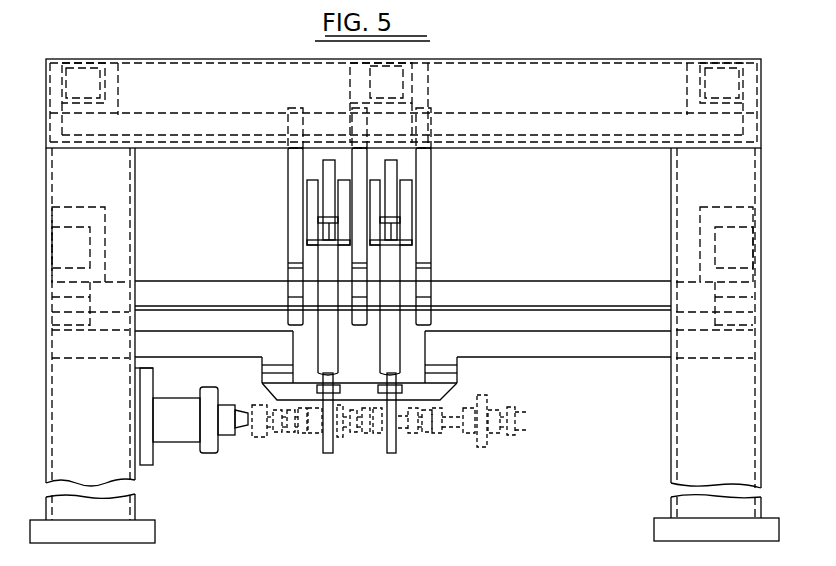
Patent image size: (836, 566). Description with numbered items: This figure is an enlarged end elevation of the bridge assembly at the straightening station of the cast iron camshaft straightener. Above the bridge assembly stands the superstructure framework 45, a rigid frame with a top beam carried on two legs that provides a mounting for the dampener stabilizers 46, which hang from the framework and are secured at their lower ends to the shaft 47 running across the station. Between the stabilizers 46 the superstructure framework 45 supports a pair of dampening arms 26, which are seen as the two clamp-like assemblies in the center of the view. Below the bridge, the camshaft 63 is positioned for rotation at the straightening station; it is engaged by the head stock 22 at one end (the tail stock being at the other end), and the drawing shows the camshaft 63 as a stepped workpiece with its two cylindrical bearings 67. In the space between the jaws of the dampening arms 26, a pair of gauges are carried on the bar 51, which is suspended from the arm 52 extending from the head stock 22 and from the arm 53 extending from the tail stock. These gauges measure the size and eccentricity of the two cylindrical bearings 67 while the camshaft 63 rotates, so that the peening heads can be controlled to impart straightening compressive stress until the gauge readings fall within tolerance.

The head stock 22 is at (158, 470).
The dampening arms 26 is at (316, 210).
The superstructure framework 45 is at (616, 53).
The dampener stabilizers 46 is at (293, 256).
The shaft 47 is at (583, 288).
The bar 51 is at (357, 388).
The arm 52 is at (192, 348).
The arm 53 is at (565, 347).
The camshaft 63 is at (358, 456).
The cylindrical bearings 67 is at (320, 445).